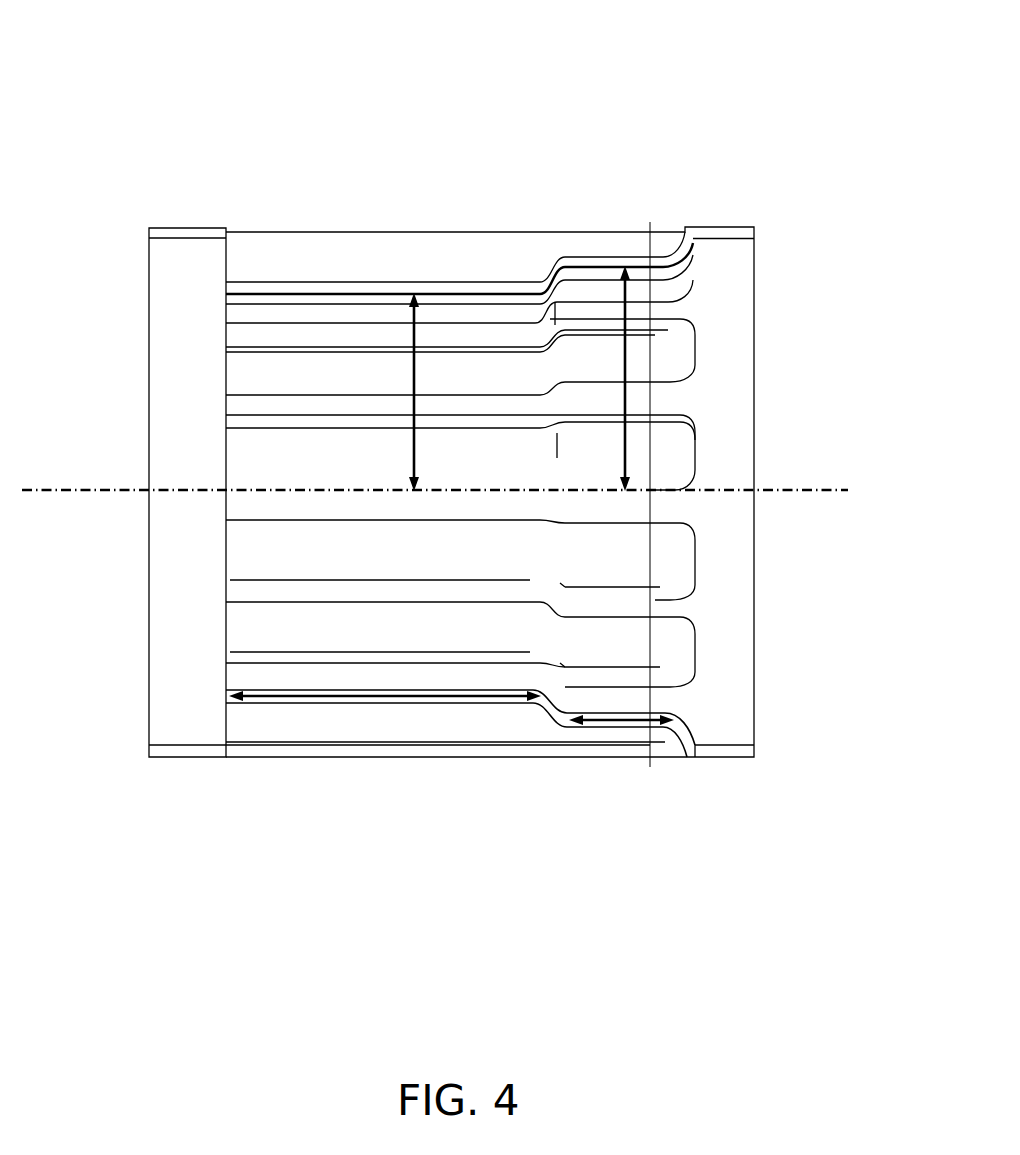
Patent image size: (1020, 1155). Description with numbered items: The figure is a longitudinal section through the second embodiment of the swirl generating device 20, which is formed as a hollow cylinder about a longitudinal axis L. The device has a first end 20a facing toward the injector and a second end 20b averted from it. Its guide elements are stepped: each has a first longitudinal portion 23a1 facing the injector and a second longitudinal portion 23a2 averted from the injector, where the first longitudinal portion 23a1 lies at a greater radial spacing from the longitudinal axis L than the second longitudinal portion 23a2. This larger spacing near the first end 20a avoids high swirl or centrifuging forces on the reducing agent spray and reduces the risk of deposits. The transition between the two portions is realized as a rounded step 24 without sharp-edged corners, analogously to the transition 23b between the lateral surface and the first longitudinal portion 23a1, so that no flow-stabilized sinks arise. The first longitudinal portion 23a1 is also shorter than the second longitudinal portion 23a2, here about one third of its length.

The swirl generating device 20 is at (789, 100).
The first end 20a is at (698, 808).
The second end 20b is at (204, 805).
The first longitudinal portion 23a1 is at (603, 254).
The second longitudinal portion 23a2 is at (390, 280).
The transition 23b is at (700, 254).
The rounded step 24 is at (542, 268).
The longitudinal axis L is at (812, 492).